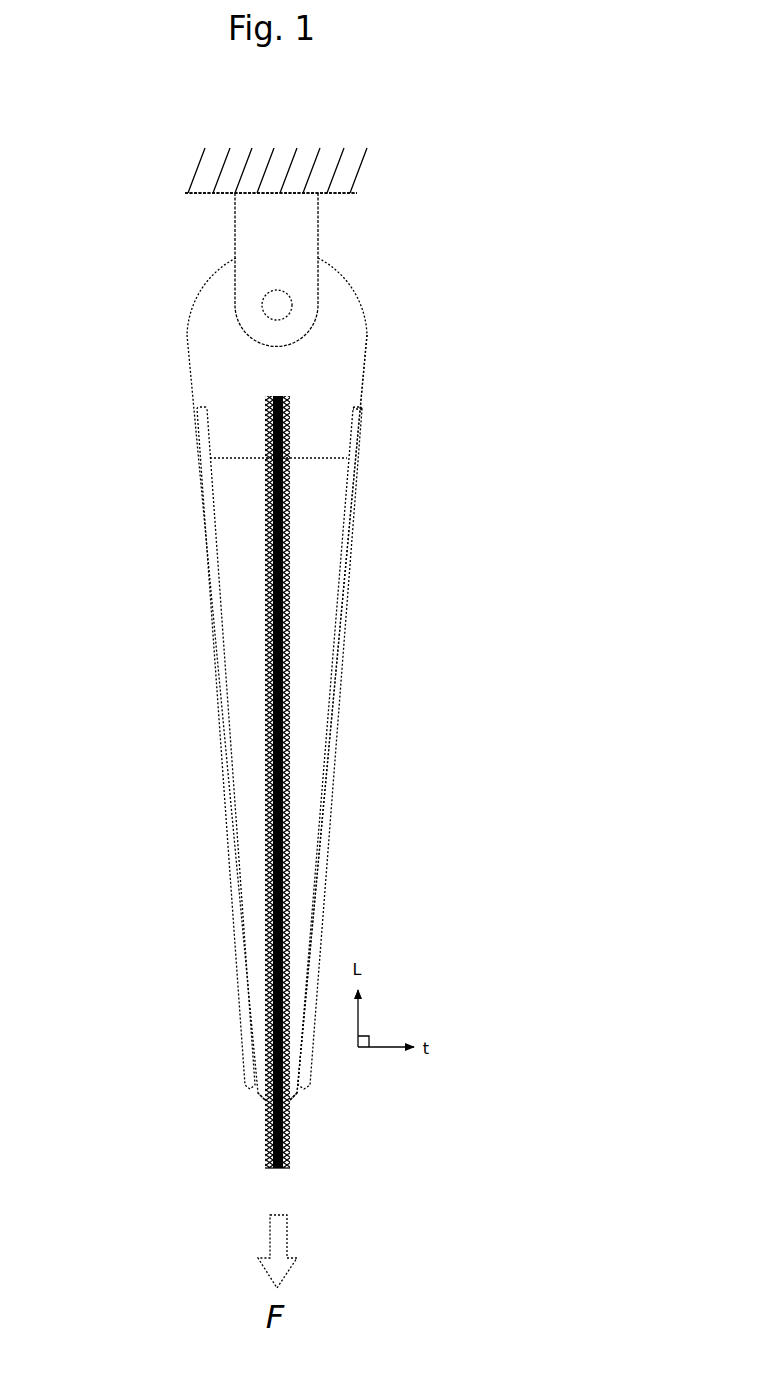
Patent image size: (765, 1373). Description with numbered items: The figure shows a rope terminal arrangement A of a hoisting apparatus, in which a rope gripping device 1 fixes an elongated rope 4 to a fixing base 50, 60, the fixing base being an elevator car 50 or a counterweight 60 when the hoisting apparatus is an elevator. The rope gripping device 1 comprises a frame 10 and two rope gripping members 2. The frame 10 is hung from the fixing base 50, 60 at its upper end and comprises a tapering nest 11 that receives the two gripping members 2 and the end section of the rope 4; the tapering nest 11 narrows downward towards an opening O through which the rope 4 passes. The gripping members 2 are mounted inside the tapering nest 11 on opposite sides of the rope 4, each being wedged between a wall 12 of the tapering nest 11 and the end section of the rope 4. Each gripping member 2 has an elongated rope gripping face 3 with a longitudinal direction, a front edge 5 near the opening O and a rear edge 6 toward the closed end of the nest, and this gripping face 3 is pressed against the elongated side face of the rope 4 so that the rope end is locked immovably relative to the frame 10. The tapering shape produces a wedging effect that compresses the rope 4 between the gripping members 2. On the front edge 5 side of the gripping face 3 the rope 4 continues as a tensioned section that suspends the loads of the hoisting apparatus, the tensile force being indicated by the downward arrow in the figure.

The rope gripping device 1 is at (420, 532).
The rope gripping member 2 is at (223, 510).
The elongated rope gripping face 3 is at (265, 576).
The rope 4 is at (290, 1157).
The front edge 5 is at (265, 1100).
The rear edge 6 is at (268, 458).
The frame 10 is at (367, 320).
The tapering nest 11 is at (322, 428).
The wall 12 is at (228, 838).
The elevator car 50 is at (290, 187).
The counterweight 60 is at (276, 170).
The rope terminal arrangement A is at (460, 187).
The opening O is at (310, 1097).